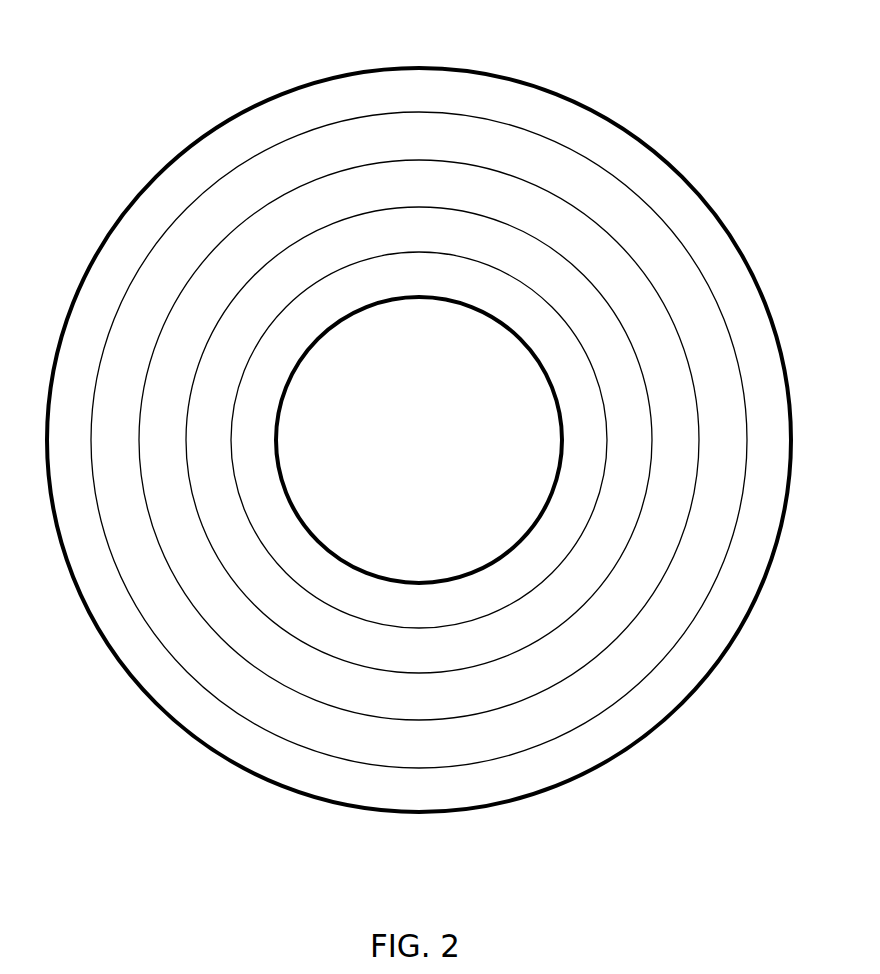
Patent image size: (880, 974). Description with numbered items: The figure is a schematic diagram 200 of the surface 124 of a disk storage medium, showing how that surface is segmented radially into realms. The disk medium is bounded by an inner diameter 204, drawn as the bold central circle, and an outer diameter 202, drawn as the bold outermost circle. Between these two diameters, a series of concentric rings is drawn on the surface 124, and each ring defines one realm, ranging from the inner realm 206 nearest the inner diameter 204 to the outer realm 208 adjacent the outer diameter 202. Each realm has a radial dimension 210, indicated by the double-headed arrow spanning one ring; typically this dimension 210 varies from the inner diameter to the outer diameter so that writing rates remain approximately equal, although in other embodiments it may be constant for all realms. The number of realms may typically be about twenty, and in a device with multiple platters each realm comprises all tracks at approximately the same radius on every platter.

The schematic diagram 200 is at (160, 88).
The surface 124 is at (345, 103).
The outer diameter 202 is at (582, 105).
The inner diameter 204 is at (553, 503).
The inner realm 206 is at (500, 590).
The outer realm 208 is at (243, 743).
The radial dimension 210 is at (230, 440).